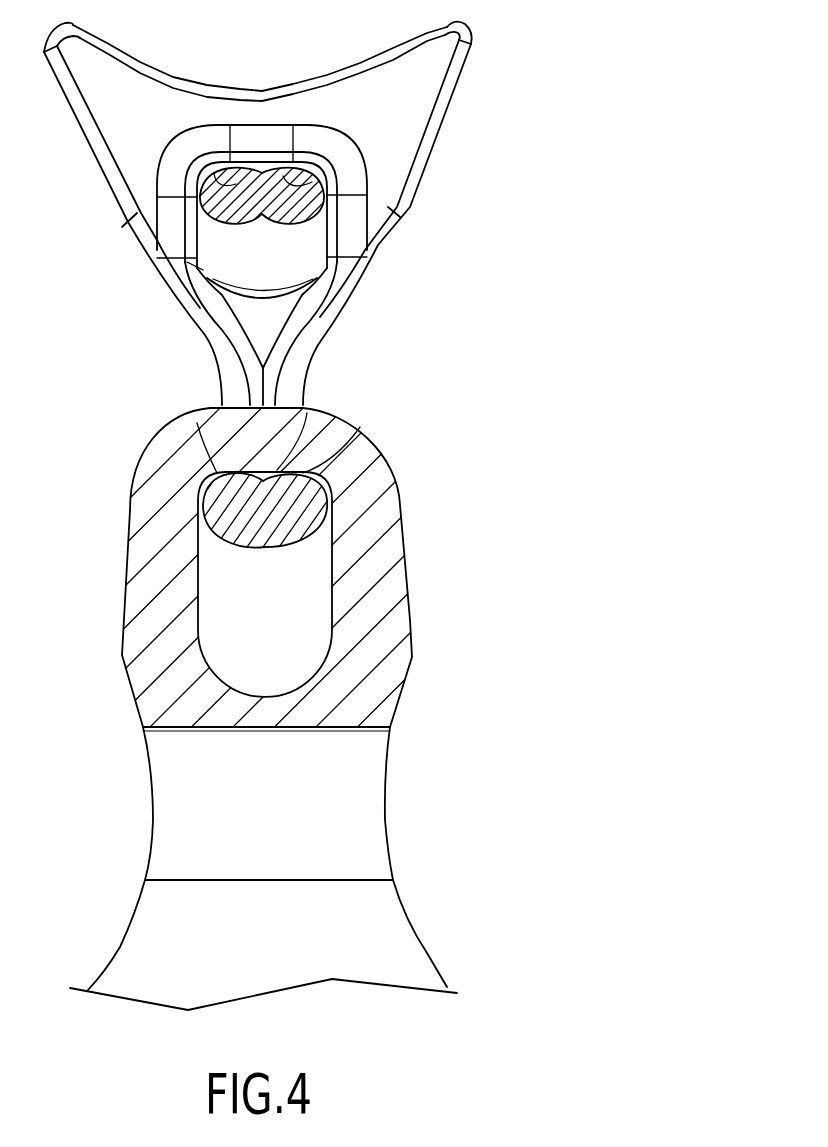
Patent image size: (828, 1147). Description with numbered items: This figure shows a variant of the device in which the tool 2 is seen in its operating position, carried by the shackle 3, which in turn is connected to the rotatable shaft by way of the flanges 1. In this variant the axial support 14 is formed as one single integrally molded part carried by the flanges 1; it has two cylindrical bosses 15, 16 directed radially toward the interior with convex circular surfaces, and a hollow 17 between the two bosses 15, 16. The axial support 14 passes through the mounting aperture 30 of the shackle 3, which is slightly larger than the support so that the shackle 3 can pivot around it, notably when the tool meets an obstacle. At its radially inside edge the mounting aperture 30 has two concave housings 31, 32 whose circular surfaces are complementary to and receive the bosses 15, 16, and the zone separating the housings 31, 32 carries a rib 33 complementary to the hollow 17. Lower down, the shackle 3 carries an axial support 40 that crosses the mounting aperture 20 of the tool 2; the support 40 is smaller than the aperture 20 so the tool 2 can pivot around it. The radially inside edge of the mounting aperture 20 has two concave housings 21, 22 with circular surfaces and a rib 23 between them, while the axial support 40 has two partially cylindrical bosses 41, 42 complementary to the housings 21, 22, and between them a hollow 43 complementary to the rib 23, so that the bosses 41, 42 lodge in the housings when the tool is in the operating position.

The flange 1 is at (410, 97).
The tool 2 is at (367, 803).
The shackle 3 is at (323, 317).
The axial support 14 is at (220, 233).
The cylindrical boss 15 is at (233, 180).
The cylindrical boss 16 is at (288, 183).
The hollow 17 is at (201, 331).
The mounting aperture 20 is at (283, 592).
The concave housing 21 is at (197, 423).
The concave housing 22 is at (360, 427).
The rib 23 is at (307, 413).
The mounting aperture 30 is at (303, 243).
The concave housing 31 is at (212, 178).
The concave housing 32 is at (320, 198).
The rib 33 is at (205, 318).
The axial support 40 is at (243, 532).
The boss 41 is at (213, 497).
The boss 42 is at (305, 523).
The hollow 43 is at (203, 538).